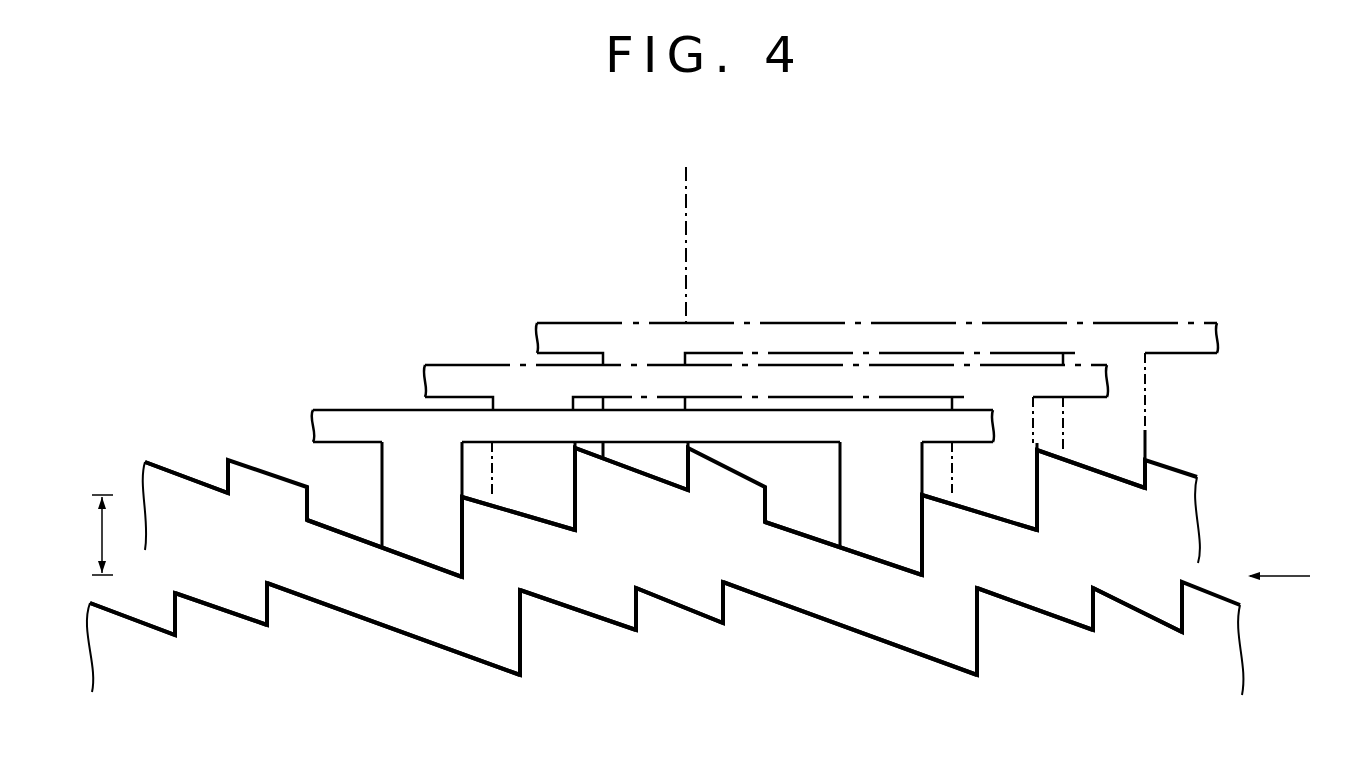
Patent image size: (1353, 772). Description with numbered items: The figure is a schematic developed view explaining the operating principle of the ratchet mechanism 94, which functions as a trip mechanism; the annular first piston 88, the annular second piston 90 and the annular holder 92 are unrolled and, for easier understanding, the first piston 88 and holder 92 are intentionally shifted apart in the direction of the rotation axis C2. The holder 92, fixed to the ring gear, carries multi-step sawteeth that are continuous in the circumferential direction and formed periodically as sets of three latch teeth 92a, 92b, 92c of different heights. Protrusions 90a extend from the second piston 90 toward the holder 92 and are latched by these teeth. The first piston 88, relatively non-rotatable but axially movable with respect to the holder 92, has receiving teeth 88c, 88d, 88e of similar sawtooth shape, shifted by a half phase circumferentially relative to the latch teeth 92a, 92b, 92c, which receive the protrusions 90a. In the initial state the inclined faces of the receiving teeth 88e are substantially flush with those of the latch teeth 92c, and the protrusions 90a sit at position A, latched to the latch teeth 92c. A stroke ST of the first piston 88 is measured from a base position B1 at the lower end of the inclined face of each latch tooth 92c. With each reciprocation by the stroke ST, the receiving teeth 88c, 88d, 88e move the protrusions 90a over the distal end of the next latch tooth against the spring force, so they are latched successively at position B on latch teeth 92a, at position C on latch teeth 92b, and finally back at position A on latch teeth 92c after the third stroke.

The first piston 88 is at (712, 652).
The receiving tooth 88c is at (147, 620).
The receiving tooth 88d is at (233, 607).
The receiving tooth 88e is at (405, 620).
The second piston 90 is at (716, 359).
The protrusion 90a is at (437, 530).
The holder 92 is at (720, 527).
The latch tooth 92a is at (537, 512).
The latch tooth 92b is at (205, 478).
The latch tooth 92c is at (400, 550).
The ratchet mechanism 94 is at (1125, 305).
The position A is at (385, 427).
The position B is at (502, 383).
The position C is at (610, 345).
The rotation axis C2 is at (688, 193).
The base position B1 is at (1300, 577).
The stroke ST is at (84, 535).